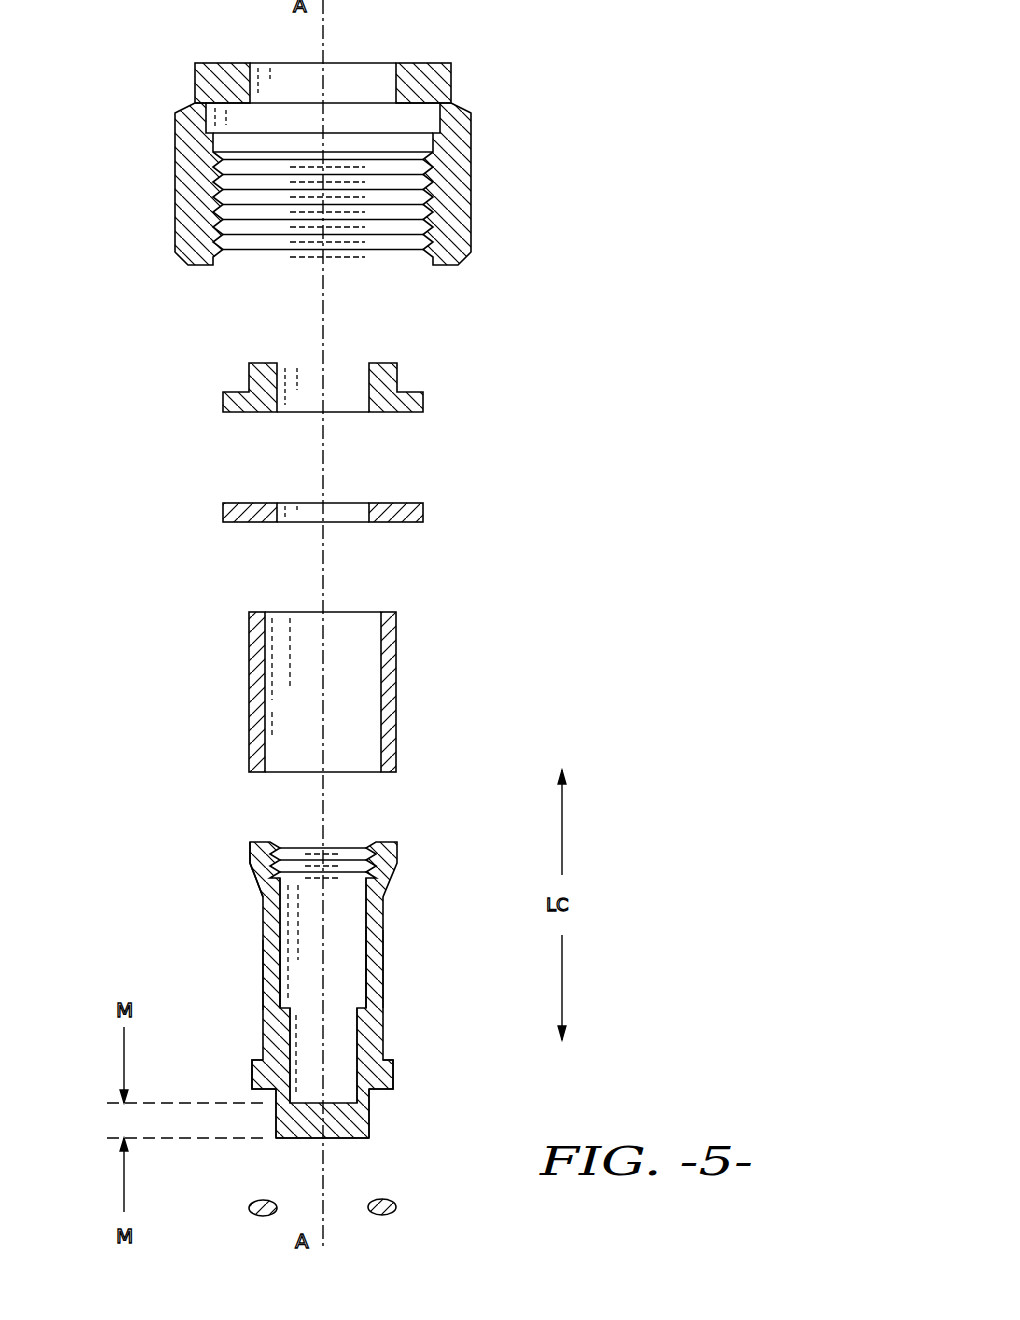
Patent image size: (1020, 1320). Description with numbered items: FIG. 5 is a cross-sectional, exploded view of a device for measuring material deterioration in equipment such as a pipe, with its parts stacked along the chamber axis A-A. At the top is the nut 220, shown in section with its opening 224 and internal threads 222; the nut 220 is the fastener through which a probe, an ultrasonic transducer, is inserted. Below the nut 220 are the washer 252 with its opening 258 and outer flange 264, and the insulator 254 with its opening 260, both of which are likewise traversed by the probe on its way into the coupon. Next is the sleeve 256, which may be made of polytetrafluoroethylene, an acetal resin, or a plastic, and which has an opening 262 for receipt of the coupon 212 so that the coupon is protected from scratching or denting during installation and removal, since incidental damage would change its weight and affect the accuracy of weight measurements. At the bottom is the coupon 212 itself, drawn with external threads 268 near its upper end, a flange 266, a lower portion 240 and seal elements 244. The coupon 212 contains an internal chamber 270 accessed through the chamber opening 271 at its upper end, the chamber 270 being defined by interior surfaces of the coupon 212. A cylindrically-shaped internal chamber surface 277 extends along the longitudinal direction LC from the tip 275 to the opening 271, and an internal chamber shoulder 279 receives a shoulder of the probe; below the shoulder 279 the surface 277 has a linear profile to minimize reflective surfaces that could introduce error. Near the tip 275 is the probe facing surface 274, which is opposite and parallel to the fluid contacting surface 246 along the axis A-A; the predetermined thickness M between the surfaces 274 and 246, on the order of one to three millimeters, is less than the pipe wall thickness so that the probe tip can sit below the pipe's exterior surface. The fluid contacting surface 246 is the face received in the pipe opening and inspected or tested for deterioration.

The coupon 212 is at (351, 1005).
The nut 220 is at (356, 159).
The internal threads of cap 222 is at (428, 226).
The opening of nut 224 is at (352, 72).
The lower end portion 240 is at (385, 1097).
The O-ring 244 is at (383, 1197).
The fluid contacting surface 246 is at (287, 1140).
The washer 252 is at (322, 401).
The insulator 254 is at (351, 514).
The sleeve 256 is at (332, 705).
The opening of washer 258 is at (292, 413).
The opening of insulator 260 is at (292, 523).
The opening of sleeve 262 is at (272, 773).
The washer flange 264 is at (236, 392).
The body flange 266 is at (259, 1060).
The external threads of body 268 is at (348, 840).
The internal chamber 270 is at (347, 926).
The chamber opening 271 is at (287, 841).
The probe facing surface 274 is at (338, 1101).
The tip of coupon 275 is at (399, 1072).
The cylindrically-shaped internal chamber surface 277 is at (352, 967).
The internal chamber shoulder 279 is at (290, 1000).